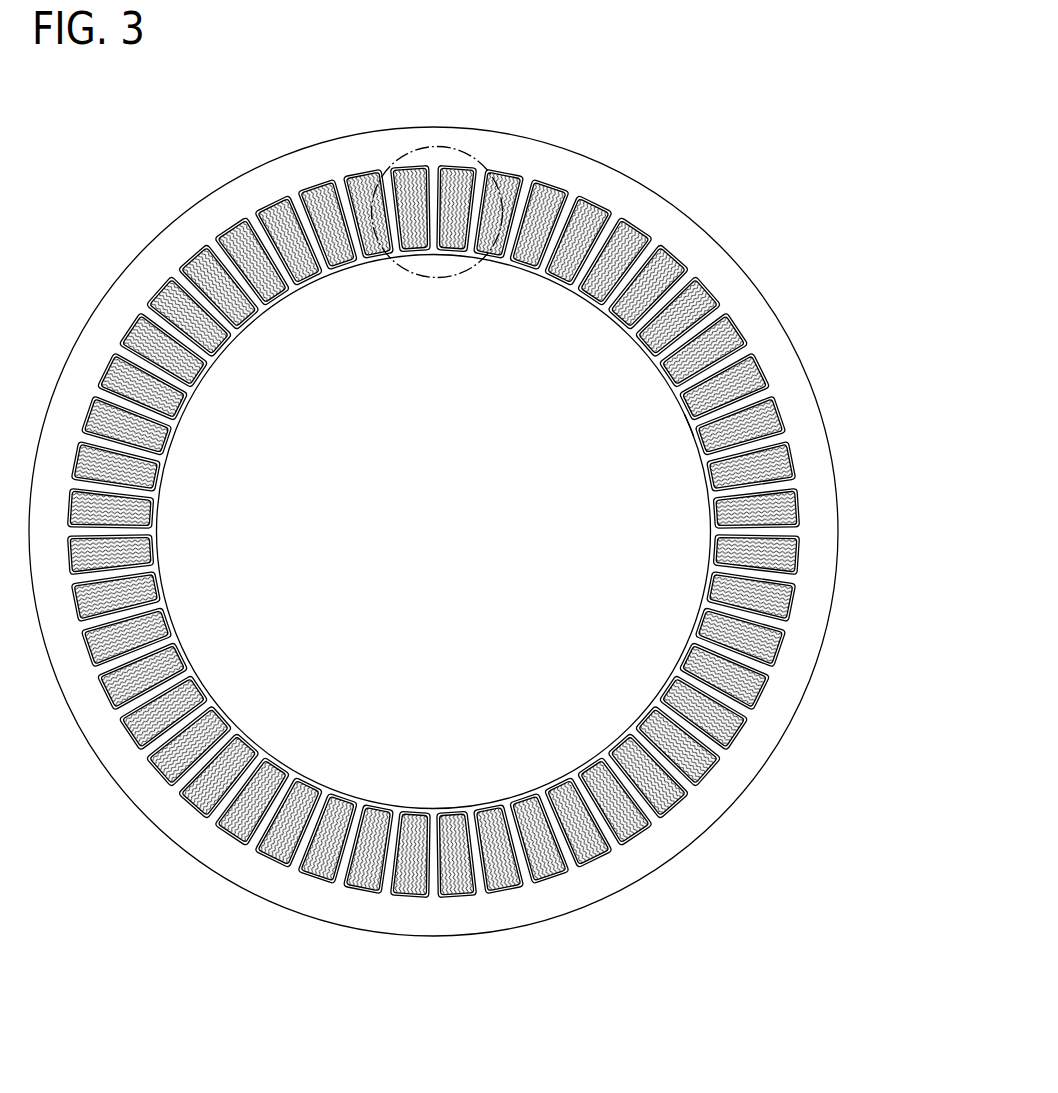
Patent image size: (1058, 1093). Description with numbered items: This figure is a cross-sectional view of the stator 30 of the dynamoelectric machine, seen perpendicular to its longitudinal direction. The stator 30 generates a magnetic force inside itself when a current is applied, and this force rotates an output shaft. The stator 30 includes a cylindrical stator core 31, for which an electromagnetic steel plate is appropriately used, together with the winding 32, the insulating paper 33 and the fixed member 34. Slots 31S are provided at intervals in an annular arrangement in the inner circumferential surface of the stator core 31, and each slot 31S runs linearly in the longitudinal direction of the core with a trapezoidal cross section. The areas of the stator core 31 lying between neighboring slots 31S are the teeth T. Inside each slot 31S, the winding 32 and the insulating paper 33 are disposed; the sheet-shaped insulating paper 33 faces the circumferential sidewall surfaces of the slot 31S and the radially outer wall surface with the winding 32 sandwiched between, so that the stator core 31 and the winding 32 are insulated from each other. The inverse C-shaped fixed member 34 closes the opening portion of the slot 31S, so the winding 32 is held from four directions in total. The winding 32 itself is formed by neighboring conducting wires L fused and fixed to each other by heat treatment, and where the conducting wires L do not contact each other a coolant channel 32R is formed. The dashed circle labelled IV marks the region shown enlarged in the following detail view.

The stator 30 is at (711, 145).
The stator core 31 is at (767, 338).
The slots 31S is at (793, 462).
The winding 32 is at (819, 560).
The coolant channel 32R is at (743, 655).
The insulating paper 33 is at (680, 257).
The fixed member 34 is at (717, 550).
The teeth T is at (697, 425).
The conducting wires L is at (787, 602).
The detail region IV is at (465, 152).